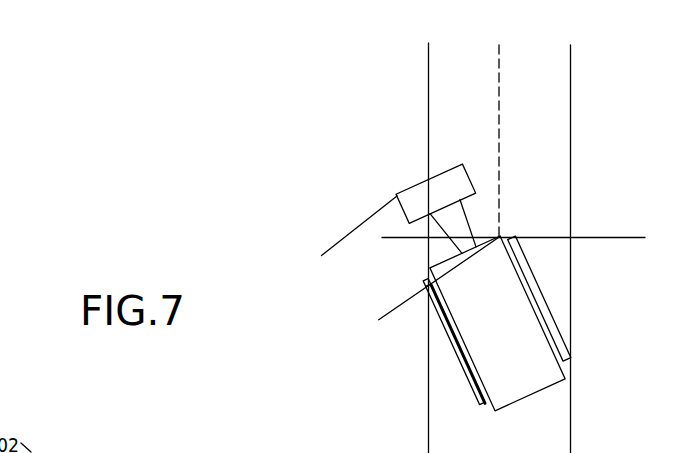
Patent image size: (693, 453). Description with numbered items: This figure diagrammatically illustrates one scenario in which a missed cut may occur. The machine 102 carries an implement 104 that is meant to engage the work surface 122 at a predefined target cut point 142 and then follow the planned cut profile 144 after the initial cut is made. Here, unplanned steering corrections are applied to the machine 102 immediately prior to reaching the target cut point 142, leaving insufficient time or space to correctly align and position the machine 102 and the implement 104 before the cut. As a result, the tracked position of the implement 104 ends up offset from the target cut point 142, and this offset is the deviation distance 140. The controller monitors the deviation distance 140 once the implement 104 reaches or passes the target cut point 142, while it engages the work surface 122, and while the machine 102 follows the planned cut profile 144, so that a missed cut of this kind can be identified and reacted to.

The machine 102 is at (488, 365).
The implement 104 is at (403, 181).
The work surface 122 is at (551, 81).
The deviation distance 140 is at (386, 310).
The target cut point 142 is at (588, 237).
The planned cut profile 144 is at (499, 68).